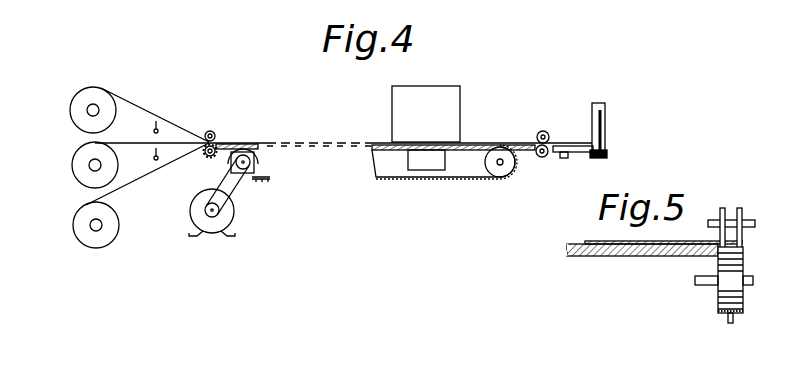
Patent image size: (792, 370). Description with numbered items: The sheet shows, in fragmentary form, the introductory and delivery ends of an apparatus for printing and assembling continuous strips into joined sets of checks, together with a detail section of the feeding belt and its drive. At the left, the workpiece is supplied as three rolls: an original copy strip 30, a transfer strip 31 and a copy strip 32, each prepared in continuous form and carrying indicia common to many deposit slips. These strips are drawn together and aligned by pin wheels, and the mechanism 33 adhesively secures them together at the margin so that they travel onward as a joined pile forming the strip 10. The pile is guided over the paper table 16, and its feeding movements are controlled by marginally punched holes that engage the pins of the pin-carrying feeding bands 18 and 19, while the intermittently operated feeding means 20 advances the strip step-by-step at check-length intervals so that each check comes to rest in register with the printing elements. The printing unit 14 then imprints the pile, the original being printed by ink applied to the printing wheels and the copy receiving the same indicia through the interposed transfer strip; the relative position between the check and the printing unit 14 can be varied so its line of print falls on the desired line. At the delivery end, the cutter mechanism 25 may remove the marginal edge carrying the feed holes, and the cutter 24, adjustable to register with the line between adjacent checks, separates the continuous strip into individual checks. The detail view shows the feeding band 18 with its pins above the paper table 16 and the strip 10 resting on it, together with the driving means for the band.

In FIG. 5, the preprinted strip 10 is at (587, 242).
In FIG. 4, the printing unit 14 is at (453, 92).
In FIG. 4, the paper table 16 is at (204, 160).
In FIG. 5, the paper table 16 is at (625, 254).
In FIG. 4, the pin-carrying feeding band 18 is at (268, 180).
In FIG. 5, the pin-carrying feeding band 18 is at (722, 314).
In FIG. 4, the pin-carrying feeding band 19 is at (418, 180).
In FIG. 4, the intermittently operated feeding means 20 is at (250, 178).
In FIG. 4, the cutter 24 is at (600, 123).
In FIG. 4, the cutter mechanism 25 is at (542, 131).
In FIG. 4, the original copy strip 30 is at (147, 107).
In FIG. 4, the transfer strip 31 is at (128, 146).
In FIG. 4, the copy strip 32 is at (132, 184).
In FIG. 4, the adhesive securing mechanism 33 is at (148, 148).